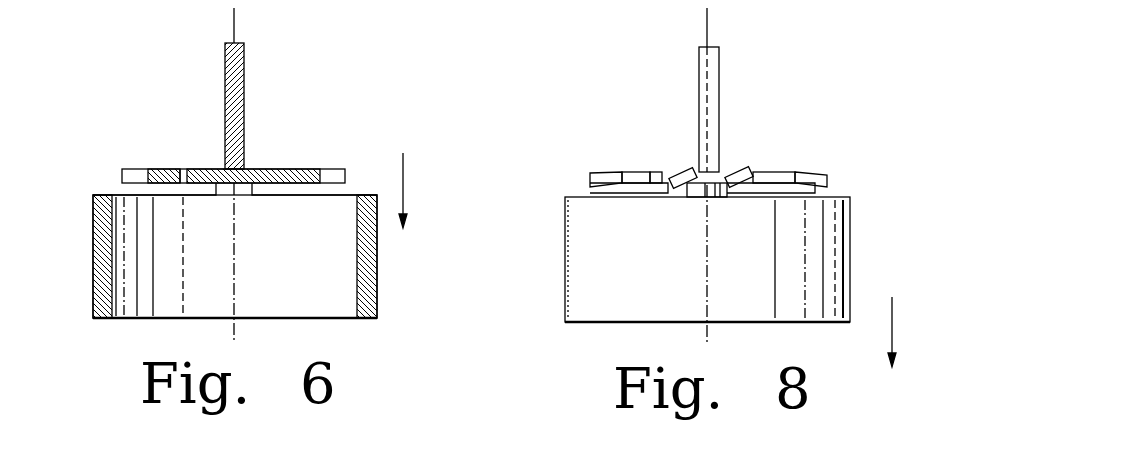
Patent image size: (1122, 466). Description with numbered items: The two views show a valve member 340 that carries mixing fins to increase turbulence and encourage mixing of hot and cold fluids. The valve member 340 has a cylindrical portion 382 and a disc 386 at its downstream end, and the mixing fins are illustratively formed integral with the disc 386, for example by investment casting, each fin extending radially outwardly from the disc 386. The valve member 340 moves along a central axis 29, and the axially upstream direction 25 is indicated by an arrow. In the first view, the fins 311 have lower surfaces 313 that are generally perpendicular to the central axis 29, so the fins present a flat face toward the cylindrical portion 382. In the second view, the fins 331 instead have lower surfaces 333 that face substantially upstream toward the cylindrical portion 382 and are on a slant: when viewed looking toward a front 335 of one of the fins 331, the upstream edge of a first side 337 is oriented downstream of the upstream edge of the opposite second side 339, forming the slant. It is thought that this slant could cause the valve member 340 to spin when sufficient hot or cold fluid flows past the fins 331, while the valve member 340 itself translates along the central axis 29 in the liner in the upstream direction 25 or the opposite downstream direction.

In FIG. 6, the axially upstream direction 25 is at (403, 188).
In FIG. 8, the axially upstream direction 25 is at (892, 323).
In FIG. 6, the central axis 29 is at (238, 265).
In FIG. 8, the central axis 29 is at (708, 288).
In FIG. 6, the mixing fins 311 is at (330, 172).
In FIG. 6, the lower surfaces 313 is at (130, 182).
In FIG. 8, the mixing fins 331 is at (812, 175).
In FIG. 8, the lower surfaces 333 is at (812, 190).
In FIG. 8, the front 335 is at (590, 178).
In FIG. 8, the first side 337 is at (700, 170).
In FIG. 8, the second side 339 is at (712, 170).
In FIG. 6, the valve member 340 is at (390, 271).
In FIG. 8, the valve member 340 is at (556, 270).
In FIG. 6, the cylindrical portion 382 is at (108, 277).
In FIG. 8, the cylindrical portion 382 is at (575, 242).
In FIG. 8, the disc 386 is at (633, 173).